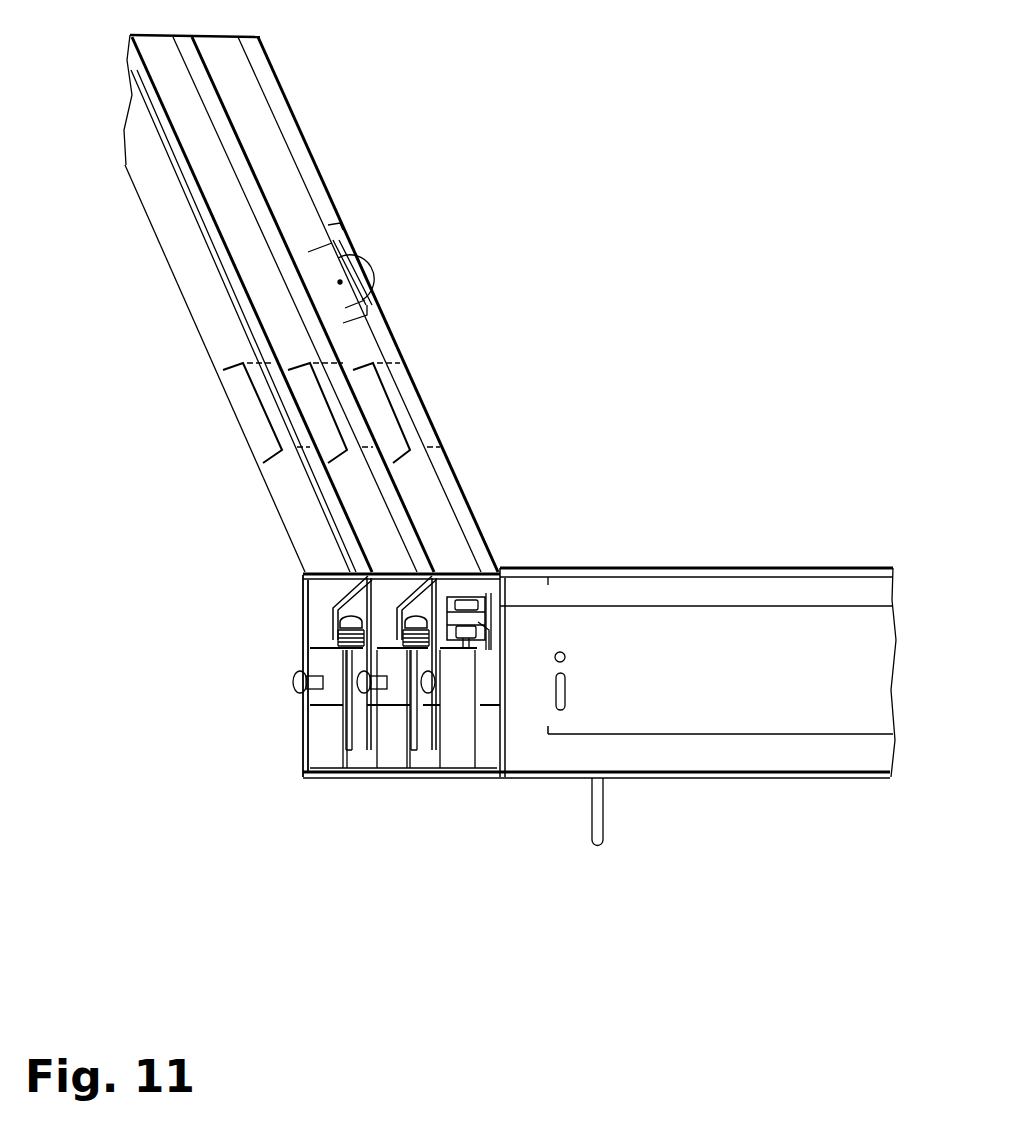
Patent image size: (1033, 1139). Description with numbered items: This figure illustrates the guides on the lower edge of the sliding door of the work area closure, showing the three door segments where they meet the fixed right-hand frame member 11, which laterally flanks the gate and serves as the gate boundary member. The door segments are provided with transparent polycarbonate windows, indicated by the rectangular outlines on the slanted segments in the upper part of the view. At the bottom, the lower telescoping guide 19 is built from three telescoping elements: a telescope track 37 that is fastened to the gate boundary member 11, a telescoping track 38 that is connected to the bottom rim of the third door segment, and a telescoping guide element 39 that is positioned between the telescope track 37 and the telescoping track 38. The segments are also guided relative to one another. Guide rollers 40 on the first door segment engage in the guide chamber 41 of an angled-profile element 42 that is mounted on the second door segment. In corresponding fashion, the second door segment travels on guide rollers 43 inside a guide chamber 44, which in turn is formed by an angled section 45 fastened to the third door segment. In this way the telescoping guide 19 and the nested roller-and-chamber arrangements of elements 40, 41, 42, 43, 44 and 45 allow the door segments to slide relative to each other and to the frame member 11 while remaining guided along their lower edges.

The right-hand frame member 11 is at (693, 689).
The lower telescoping guide 19 is at (513, 609).
The telescope track 37 is at (466, 604).
The telescoping track 38 is at (463, 632).
The telescoping guide element 39 is at (480, 623).
The guide rollers 40 is at (338, 632).
The guide chamber 41 is at (353, 607).
The angled-profile element 42 is at (348, 588).
The guide rollers 43 is at (400, 632).
The guide chamber 44 is at (408, 610).
The angled section 45 is at (408, 590).